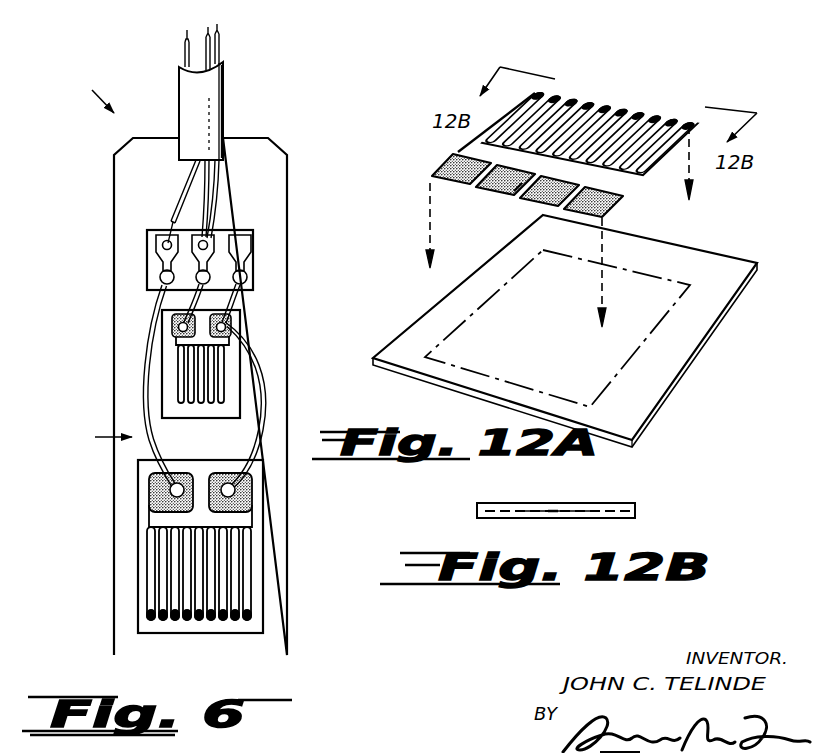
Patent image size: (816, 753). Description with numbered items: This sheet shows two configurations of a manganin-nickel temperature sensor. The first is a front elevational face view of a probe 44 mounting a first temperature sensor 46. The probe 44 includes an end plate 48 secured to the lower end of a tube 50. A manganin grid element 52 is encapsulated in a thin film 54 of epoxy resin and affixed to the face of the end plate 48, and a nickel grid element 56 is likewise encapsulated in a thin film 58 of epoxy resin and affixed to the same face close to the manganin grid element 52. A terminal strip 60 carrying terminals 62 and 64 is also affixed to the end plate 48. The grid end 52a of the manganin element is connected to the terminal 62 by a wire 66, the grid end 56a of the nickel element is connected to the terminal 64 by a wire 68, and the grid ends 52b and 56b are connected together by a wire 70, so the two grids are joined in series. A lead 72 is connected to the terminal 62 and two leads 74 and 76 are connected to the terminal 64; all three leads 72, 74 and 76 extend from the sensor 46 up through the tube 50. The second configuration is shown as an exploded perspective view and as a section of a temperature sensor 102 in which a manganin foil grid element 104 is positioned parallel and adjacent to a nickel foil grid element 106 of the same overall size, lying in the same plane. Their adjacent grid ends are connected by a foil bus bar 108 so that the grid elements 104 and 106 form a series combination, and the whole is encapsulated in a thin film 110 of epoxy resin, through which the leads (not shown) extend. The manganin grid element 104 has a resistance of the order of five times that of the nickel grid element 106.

In FIG. 6, the probe 44 is at (90, 89).
In FIG. 6, the manganin-nickel temperature sensor 46 is at (97, 437).
In FIG. 6, the end plate 48 is at (287, 173).
In FIG. 6, the tube 50 is at (223, 104).
In FIG. 6, the manganin grid element 52 is at (150, 596).
In FIG. 6, the grid end 52a is at (150, 491).
In FIG. 6, the grid end 52b is at (255, 501).
In FIG. 6, the thin film 54 is at (140, 531).
In FIG. 6, the nickel grid element 56 is at (178, 379).
In FIG. 6, the grid end 56a is at (173, 321).
In FIG. 6, the grid end 56b is at (229, 319).
In FIG. 6, the thin film 58 is at (163, 354).
In FIG. 6, the terminal strip 60 is at (150, 233).
In FIG. 6, the terminal 62 is at (158, 251).
In FIG. 6, the terminal 64 is at (253, 266).
In FIG. 6, the wire 66 is at (146, 336).
In FIG. 6, the wire 68 is at (166, 296).
In FIG. 6, the wire 70 is at (266, 386).
In FIG. 6, the lead 72 is at (184, 49).
In FIG. 6, the lead 74 is at (221, 51).
In FIG. 6, the lead 76 is at (203, 60).
In FIG. 12A, the manganin-nickel temperature sensor 102 is at (622, 147).
In FIG. 12B, the manganin-nickel temperature sensor 102 is at (549, 512).
In FIG. 12A, the manganin foil grid element 104 is at (567, 103).
In FIG. 12B, the manganin foil grid element 104 is at (606, 510).
In FIG. 12A, the nickel foil grid element 106 is at (648, 120).
In FIG. 12B, the nickel foil grid element 106 is at (498, 506).
In FIG. 12A, the foil bus bar 108 is at (523, 193).
In FIG. 12B, the foil bus bar 108 is at (551, 517).
In FIG. 12A, the thin film 110 is at (688, 367).
In FIG. 12B, the thin film 110 is at (636, 512).